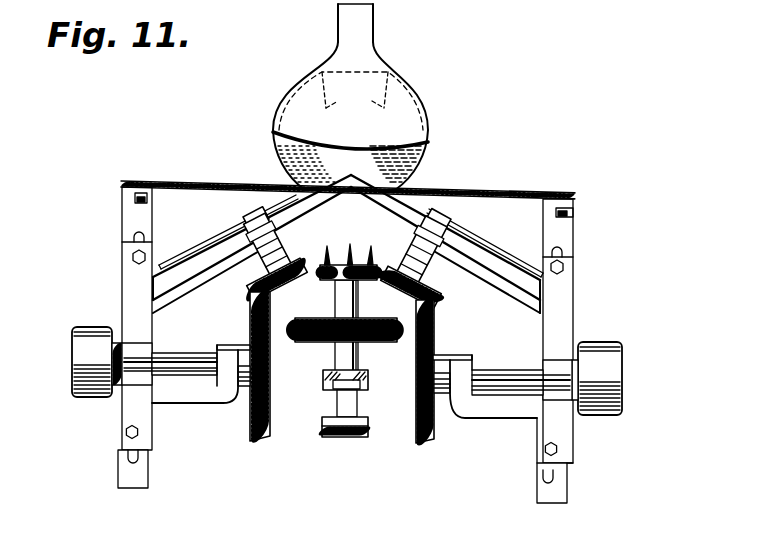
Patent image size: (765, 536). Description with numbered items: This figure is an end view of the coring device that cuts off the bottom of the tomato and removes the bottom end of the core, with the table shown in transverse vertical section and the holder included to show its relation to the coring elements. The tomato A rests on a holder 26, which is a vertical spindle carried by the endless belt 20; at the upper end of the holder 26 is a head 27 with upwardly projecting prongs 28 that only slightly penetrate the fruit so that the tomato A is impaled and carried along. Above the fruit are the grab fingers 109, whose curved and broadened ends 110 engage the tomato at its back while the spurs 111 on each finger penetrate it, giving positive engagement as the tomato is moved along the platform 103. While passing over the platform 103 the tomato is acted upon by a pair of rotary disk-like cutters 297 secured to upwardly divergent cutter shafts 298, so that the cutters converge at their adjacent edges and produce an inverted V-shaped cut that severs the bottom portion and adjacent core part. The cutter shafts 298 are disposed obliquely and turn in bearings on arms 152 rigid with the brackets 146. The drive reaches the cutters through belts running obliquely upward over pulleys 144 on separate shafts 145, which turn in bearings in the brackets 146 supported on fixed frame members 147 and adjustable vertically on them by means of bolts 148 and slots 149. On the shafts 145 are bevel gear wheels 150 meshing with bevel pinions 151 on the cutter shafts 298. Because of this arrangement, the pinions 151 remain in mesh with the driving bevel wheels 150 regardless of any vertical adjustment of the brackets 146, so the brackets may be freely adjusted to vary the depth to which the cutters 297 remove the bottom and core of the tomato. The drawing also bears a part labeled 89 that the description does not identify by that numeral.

The grab fingers 109 is at (371, 34).
The ends of the grab fingers 110 is at (412, 112).
The spurs 111 is at (382, 97).
The tomato A is at (422, 147).
The platform 103 is at (527, 195).
The rotary disk-like cutters 297 is at (178, 263).
The cutter shafts 298 is at (248, 218).
The arms 152 is at (500, 257).
The bevel pinions 151 is at (308, 258).
The bevel gear wheels 150 is at (438, 331).
The shafts 145 is at (182, 357).
The brackets 146 is at (195, 396).
The pulleys 144 is at (72, 364).
The frame members 147 is at (146, 479).
The bolts 148 is at (544, 451).
The slots 149 is at (543, 474).
The prongs 28 is at (370, 257).
The head 27 is at (377, 268).
The holders 26 is at (335, 300).
The gear wheel 89 is at (344, 342).
The endless belt 20 is at (357, 404).